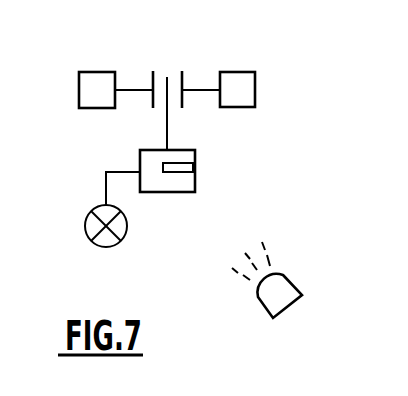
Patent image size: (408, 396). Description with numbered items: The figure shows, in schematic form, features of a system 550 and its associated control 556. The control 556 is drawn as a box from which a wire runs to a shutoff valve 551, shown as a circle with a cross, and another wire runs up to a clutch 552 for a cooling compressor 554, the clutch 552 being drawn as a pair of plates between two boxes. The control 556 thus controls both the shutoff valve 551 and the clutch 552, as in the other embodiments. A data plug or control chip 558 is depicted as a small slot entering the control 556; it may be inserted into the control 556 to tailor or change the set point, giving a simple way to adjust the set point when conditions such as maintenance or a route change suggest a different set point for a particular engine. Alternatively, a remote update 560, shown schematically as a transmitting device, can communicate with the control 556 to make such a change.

The system 550 is at (150, 250).
The shutoff valve 551 is at (102, 210).
The clutch 552 is at (157, 78).
The cooling compressor 554 is at (240, 78).
The control 556 is at (190, 183).
The data plug or control chip 558 is at (193, 168).
The remote update 560 is at (263, 311).